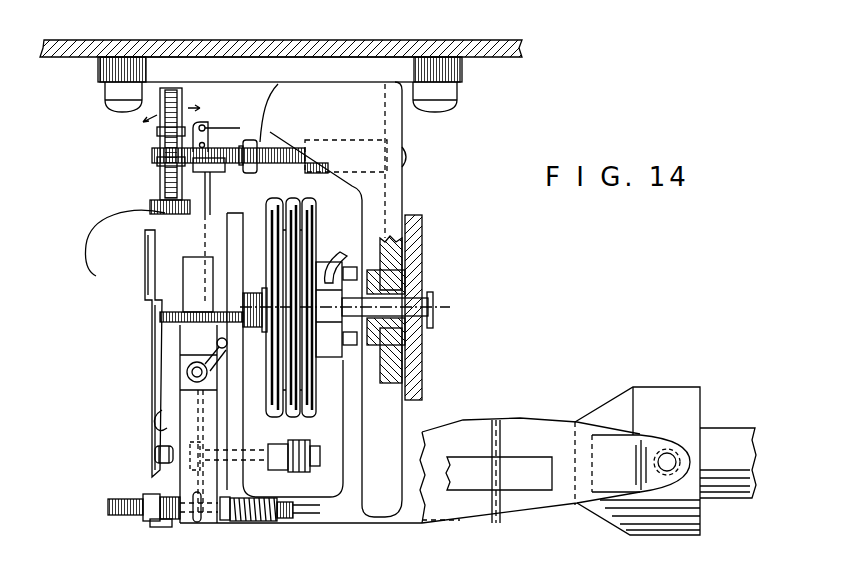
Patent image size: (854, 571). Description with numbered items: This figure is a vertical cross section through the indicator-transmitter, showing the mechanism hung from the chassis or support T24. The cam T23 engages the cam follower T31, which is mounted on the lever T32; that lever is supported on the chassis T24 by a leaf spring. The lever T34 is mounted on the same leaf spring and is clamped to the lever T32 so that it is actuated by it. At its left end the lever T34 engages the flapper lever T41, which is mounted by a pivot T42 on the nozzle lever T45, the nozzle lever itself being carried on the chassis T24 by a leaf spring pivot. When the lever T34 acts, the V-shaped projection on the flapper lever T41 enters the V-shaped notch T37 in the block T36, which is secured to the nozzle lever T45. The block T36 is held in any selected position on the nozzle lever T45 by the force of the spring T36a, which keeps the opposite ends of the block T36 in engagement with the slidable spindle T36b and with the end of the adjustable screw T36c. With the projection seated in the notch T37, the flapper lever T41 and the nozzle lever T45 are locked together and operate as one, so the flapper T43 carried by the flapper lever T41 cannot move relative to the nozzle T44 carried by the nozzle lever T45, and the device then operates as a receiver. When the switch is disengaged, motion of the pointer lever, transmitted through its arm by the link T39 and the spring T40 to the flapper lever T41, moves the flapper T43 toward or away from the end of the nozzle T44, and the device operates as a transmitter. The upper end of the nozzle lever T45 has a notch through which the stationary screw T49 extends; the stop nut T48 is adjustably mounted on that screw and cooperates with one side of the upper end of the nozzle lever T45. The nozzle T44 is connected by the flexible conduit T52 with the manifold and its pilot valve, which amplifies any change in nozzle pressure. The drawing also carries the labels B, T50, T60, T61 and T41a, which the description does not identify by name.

The chassis T24 is at (336, 46).
The spring T40 is at (218, 121).
The nozzle lever T45 is at (200, 232).
The stop nut T48 is at (262, 148).
The stationary screw T49 is at (241, 143).
The link T39 is at (221, 173).
The pulley B is at (287, 198).
The tongue T50 is at (333, 248).
The bearing bracket T60 is at (382, 277).
The flapper lever T41 is at (150, 258).
The rod T61 is at (244, 293).
The plate T41a is at (207, 420).
The pivot T42 is at (187, 374).
The flapper T43 is at (152, 428).
The nozzle T44 is at (168, 452).
The flexible conduit T52 is at (313, 444).
The block T36 is at (143, 496).
The adjustable screw T36c is at (108, 509).
The V-shaped notch T37 is at (157, 524).
The spring T36a is at (260, 524).
The slidable spindle T36b is at (291, 520).
The lever T34 is at (453, 508).
The lever T32 is at (573, 433).
The cam T23 is at (688, 387).
The cam follower T31 is at (670, 459).